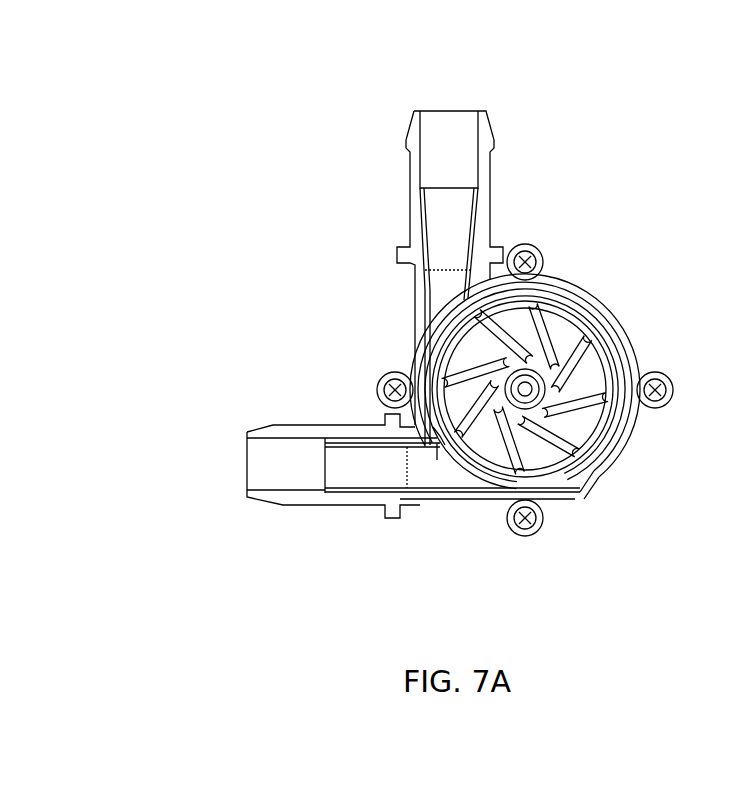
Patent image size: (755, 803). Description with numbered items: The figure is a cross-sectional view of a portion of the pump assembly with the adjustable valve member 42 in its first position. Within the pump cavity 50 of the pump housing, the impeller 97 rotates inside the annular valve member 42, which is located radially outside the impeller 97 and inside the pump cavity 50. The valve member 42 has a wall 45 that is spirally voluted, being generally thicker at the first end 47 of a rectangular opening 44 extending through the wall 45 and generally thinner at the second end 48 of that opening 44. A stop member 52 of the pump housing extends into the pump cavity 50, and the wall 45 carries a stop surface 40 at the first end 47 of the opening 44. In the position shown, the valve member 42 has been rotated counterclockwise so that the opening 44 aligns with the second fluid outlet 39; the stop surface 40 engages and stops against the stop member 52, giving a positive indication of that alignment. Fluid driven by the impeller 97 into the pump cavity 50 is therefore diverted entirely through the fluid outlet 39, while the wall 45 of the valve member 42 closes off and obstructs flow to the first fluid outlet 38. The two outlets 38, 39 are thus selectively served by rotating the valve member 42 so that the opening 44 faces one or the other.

The first fluid outlet 38 is at (427, 111).
The second fluid outlet 39 is at (248, 497).
The stop surface 40 is at (437, 427).
The valve member 42 is at (597, 468).
The opening 44 is at (497, 478).
The wall 45 is at (455, 325).
The first end 47 is at (433, 412).
The second end 48 is at (575, 478).
The pump cavity 50 is at (575, 335).
The stop member 52 is at (438, 440).
The impeller 97 is at (583, 420).